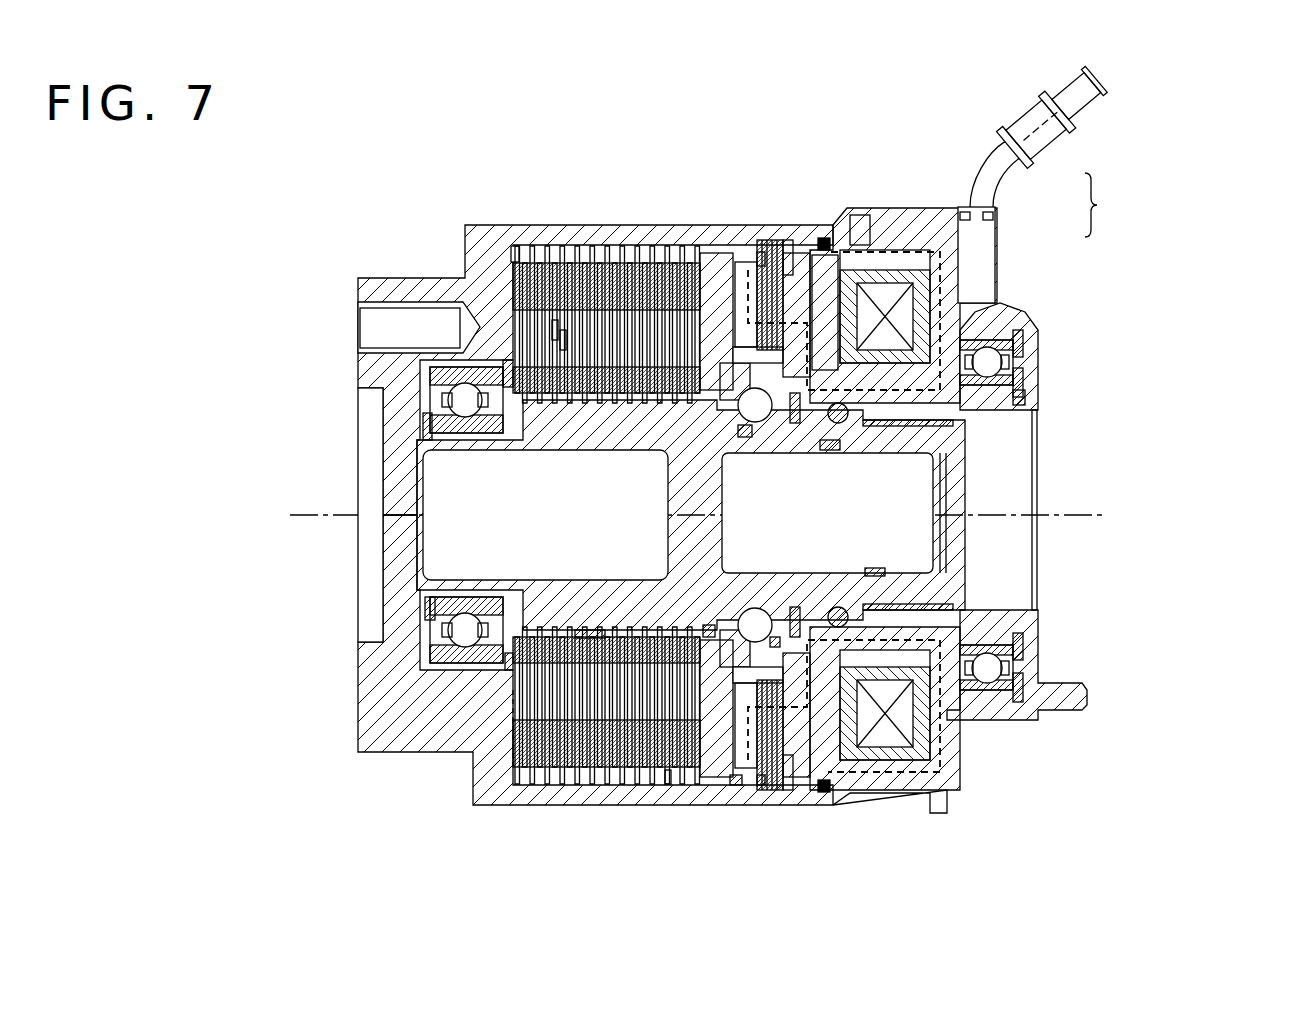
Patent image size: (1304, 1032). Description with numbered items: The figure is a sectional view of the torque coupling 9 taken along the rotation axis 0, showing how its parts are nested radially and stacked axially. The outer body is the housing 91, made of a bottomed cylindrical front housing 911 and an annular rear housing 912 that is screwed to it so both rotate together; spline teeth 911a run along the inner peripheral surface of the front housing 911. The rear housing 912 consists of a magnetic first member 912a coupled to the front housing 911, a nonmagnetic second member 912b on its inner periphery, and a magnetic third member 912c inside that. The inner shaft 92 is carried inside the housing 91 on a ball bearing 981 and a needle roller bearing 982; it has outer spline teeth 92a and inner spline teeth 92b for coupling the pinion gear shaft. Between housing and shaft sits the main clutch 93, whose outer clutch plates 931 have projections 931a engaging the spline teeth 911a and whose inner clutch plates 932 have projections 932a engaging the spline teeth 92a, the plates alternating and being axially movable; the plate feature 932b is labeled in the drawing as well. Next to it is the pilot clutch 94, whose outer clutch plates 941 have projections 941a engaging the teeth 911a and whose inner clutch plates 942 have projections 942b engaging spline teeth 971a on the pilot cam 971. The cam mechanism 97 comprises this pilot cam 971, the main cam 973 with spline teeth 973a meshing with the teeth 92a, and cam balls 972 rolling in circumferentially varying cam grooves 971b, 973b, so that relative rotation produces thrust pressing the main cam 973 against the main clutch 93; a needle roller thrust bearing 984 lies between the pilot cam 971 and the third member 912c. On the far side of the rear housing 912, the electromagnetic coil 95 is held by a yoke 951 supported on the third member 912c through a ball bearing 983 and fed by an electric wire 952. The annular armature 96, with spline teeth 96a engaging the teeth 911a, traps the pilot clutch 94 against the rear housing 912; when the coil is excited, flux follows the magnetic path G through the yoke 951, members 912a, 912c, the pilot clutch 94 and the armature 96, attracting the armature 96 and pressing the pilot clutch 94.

The torque coupling 9 is at (653, 475).
The rotation axis 0 is at (1083, 504).
The housing 91 is at (793, 485).
The front housing 911 is at (720, 487).
The spline teeth 911a is at (512, 250).
The rear housing 912 is at (942, 485).
The first member 912a is at (855, 243).
The second member 912b is at (790, 285).
The third member 912c is at (1025, 401).
The magnetic path G is at (950, 252).
The inner shaft 92 is at (836, 519).
The spline teeth 92a is at (587, 633).
The spline teeth 92b is at (896, 550).
The main clutch 93 is at (372, 565).
The outer clutch plates 931 is at (614, 565).
The projections 931a is at (668, 781).
The inner clutch plates 932 is at (359, 515).
The projections 932a is at (563, 337).
The inner clutch plate portion 932b is at (560, 337).
The pilot clutch 94 is at (800, 492).
The outer clutch plates 941 is at (796, 526).
The projections 941a is at (760, 262).
The inner clutch plates 942 is at (794, 549).
The projections 942b is at (775, 640).
The electromagnetic coil 95 is at (1060, 413).
The yoke 951 is at (1023, 324).
The electric wire 952 is at (990, 160).
The armature 96 is at (762, 570).
The spline teeth 96a is at (761, 785).
The cam mechanism 97 is at (695, 506).
The pilot cam 971 is at (807, 566).
The spline teeth 971a is at (735, 783).
The cam grooves 971b is at (830, 458).
The cam balls 972 is at (762, 400).
The main cam 973 is at (718, 472).
The spline teeth 973a is at (713, 632).
The cam grooves 973b is at (745, 432).
The ball bearing 981 is at (428, 426).
The needle roller bearing 982 is at (925, 420).
The ball bearing 983 is at (1023, 342).
The needle roller thrust bearing 984 is at (813, 612).